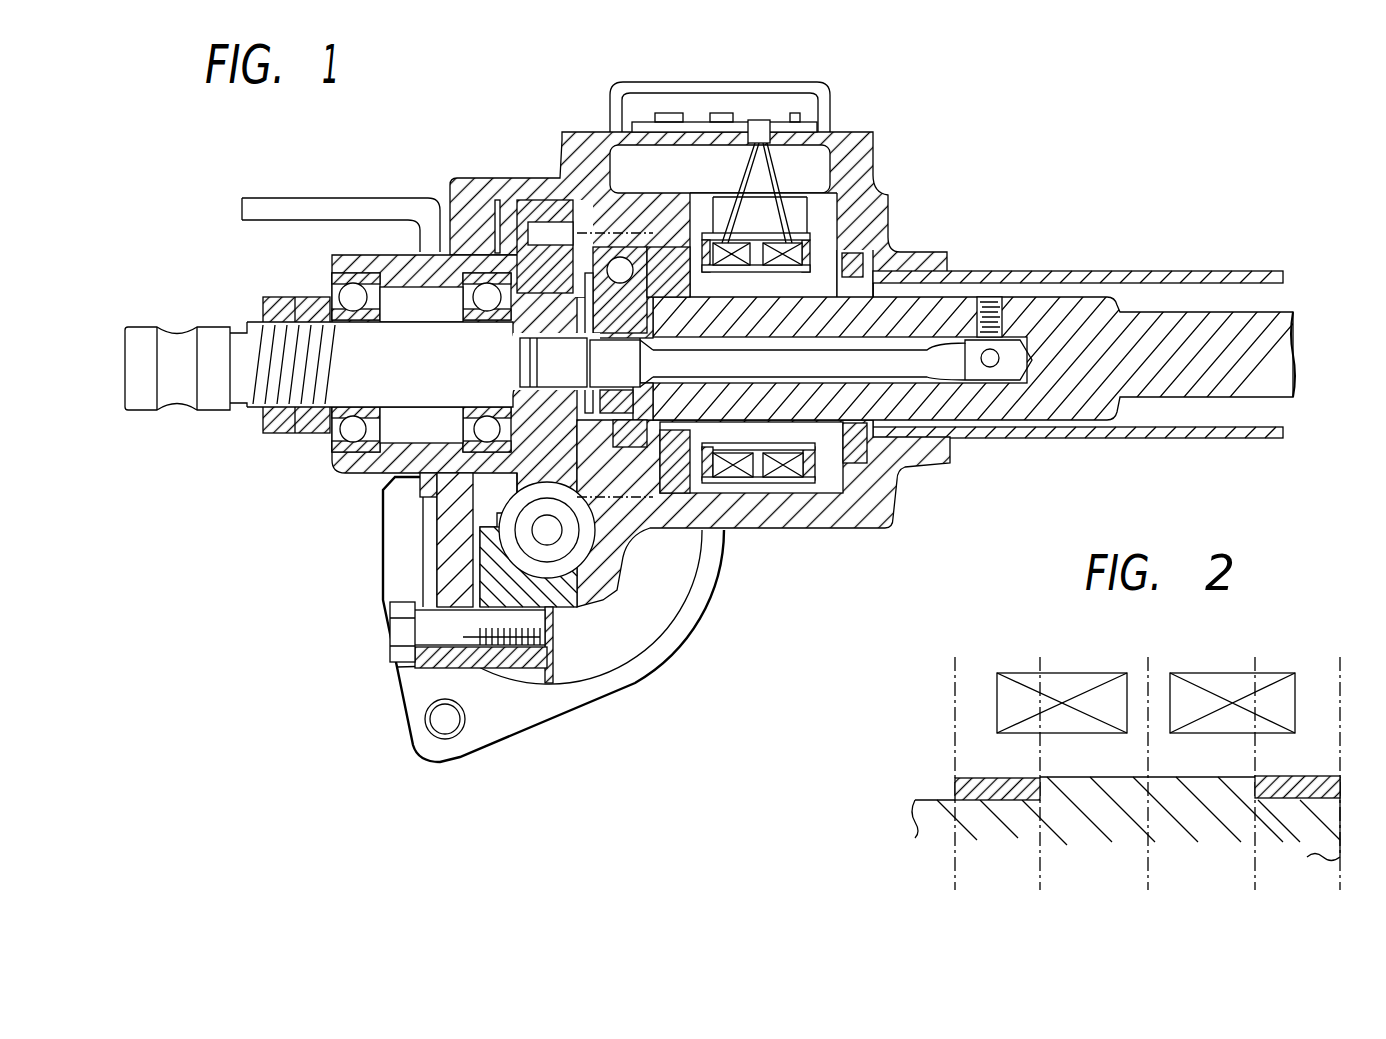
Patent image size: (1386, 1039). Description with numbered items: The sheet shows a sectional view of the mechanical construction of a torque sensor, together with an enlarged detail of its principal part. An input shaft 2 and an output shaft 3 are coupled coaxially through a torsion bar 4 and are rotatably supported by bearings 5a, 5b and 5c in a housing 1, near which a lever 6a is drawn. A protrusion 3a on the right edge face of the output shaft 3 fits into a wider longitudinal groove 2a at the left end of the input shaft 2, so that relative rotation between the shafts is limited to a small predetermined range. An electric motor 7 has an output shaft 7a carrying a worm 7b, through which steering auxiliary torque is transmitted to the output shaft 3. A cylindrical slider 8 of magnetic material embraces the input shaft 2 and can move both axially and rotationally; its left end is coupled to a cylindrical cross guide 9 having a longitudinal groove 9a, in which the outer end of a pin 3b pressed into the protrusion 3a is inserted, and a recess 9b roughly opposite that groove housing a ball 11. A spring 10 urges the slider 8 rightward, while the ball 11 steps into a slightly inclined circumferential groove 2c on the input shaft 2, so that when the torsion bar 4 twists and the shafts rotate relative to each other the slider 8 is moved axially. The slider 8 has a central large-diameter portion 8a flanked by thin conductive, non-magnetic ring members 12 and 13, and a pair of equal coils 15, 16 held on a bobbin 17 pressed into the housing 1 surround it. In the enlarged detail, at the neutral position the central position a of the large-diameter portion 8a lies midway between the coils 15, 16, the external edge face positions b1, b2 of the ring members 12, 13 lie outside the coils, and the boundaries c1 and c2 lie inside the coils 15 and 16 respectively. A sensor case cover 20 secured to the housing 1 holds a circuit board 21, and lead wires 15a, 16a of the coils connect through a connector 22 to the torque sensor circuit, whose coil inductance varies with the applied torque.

In FIG. 1, the housing 1 is at (493, 197).
In FIG. 1, the input shaft 2 is at (1140, 330).
In FIG. 1, the longitudinal groove 2a is at (650, 418).
In FIG. 1, the groove 2c is at (583, 300).
In FIG. 1, the output shaft 3 is at (281, 433).
In FIG. 1, the protrusion 3a is at (600, 400).
In FIG. 1, the pin 3b is at (580, 545).
In FIG. 1, the torsion bar 4 is at (953, 366).
In FIG. 1, the bearing 5a is at (815, 263).
In FIG. 1, the bearing 5b is at (384, 515).
In FIG. 1, the bearing 5c is at (342, 475).
In FIG. 1, the lever 6a is at (432, 214).
In FIG. 1, the electric motor 7 is at (657, 632).
In FIG. 1, the output shaft of electric motor 7a is at (575, 616).
In FIG. 1, the worm 7b is at (550, 540).
In FIG. 1, the slider 8 is at (890, 497).
In FIG. 2, the slider 8 is at (1335, 836).
In FIG. 1, the large-diameter portion 8a is at (758, 452).
In FIG. 2, the large-diameter portion 8a is at (1115, 792).
In FIG. 1, the cross guide 9 is at (672, 252).
In FIG. 1, the longitudinal groove 9a is at (625, 465).
In FIG. 1, the recess 9b is at (621, 257).
In FIG. 1, the spring 10 is at (562, 178).
In FIG. 1, the ball 11 is at (630, 288).
In FIG. 1, the ring member 12 is at (855, 435).
In FIG. 2, the ring member 12 is at (1297, 777).
In FIG. 1, the ring member 13 is at (688, 495).
In FIG. 2, the ring member 13 is at (1000, 778).
In FIG. 1, the coil 15 is at (820, 250).
In FIG. 2, the coil 15 is at (1225, 680).
In FIG. 1, the lead wire 15a is at (790, 240).
In FIG. 1, the coil 16 is at (735, 240).
In FIG. 2, the coil 16 is at (1082, 680).
In FIG. 1, the lead wire 16a is at (745, 232).
In FIG. 1, the bobbin 17 is at (798, 490).
In FIG. 1, the sensor case cover 20 is at (800, 82).
In FIG. 1, the circuit board 21 is at (812, 127).
In FIG. 1, the connector 22 is at (760, 120).
In FIG. 2, the central position a is at (1150, 791).
In FIG. 2, the axial external edge face position b1 is at (1340, 791).
In FIG. 2, the axial external edge face position b2 is at (955, 792).
In FIG. 2, the boundary c1 is at (1259, 792).
In FIG. 2, the boundary c2 is at (1042, 792).